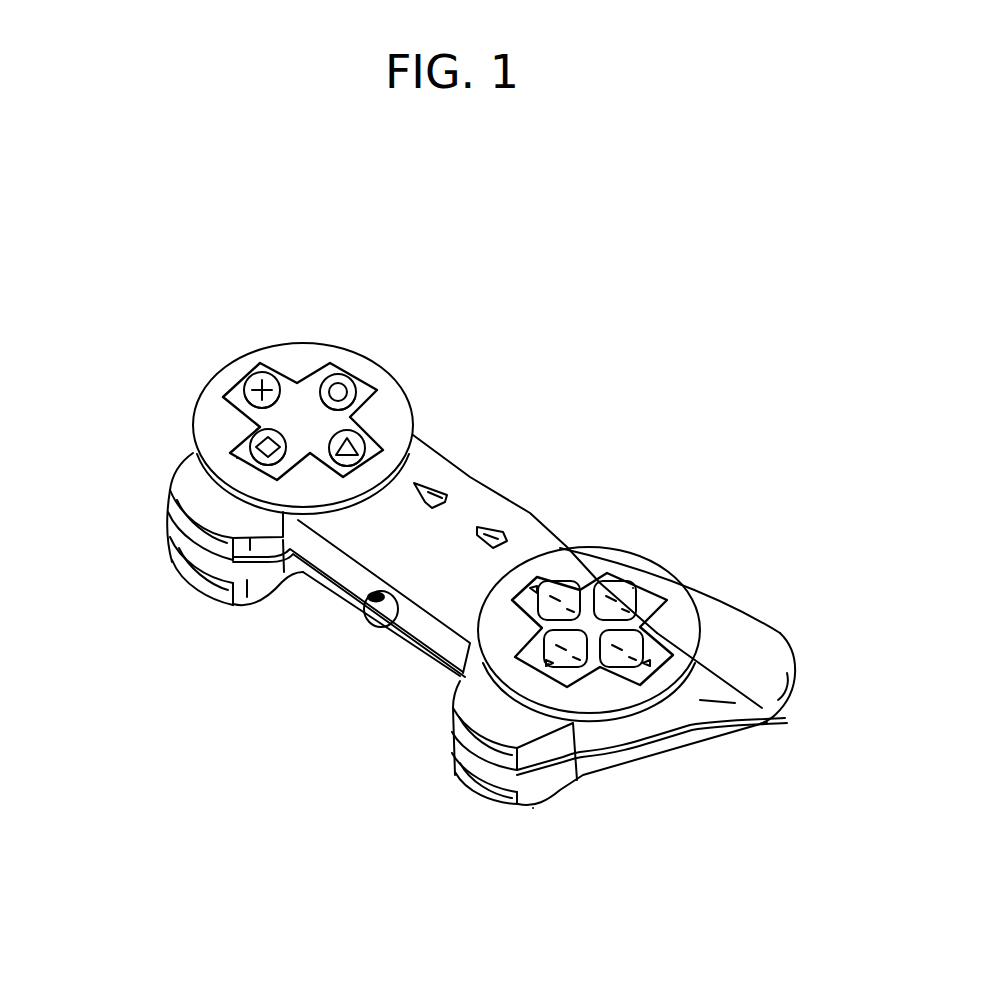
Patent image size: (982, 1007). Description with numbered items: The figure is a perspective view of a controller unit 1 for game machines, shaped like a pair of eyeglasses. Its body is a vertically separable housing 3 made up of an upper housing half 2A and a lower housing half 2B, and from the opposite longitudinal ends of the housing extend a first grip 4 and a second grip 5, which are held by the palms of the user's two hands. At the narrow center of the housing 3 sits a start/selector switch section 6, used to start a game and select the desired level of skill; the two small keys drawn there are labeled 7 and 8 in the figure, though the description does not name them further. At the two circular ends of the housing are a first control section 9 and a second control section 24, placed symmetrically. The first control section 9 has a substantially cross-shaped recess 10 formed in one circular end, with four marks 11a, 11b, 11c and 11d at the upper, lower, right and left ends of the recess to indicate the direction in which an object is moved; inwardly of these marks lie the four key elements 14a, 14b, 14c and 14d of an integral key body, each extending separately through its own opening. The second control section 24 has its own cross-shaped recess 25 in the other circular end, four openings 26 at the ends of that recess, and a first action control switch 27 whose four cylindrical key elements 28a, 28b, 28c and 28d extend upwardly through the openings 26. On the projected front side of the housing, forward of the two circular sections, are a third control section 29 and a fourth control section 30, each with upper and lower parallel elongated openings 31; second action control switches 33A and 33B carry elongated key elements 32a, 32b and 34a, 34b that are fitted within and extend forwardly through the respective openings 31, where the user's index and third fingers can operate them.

The controller unit 1 is at (545, 241).
The upper housing half 2A is at (645, 723).
The lower housing half 2B is at (613, 763).
The housing 3 is at (737, 783).
The first grip 4 is at (788, 623).
The second grip 5 is at (401, 357).
The start/selector switch section 6 is at (488, 402).
The select button 7 is at (496, 528).
The start button 8 is at (440, 495).
The first control section 9 is at (650, 535).
The cross-shaped recess 10 is at (655, 630).
The mark 11a is at (548, 664).
The mark 11b is at (548, 590).
The mark 11c is at (633, 588).
The mark 11d is at (762, 708).
The key element 14a is at (570, 650).
The key element 14b is at (572, 586).
The key element 14c is at (614, 588).
The key element 14d is at (675, 652).
The second control section 24 is at (285, 330).
The cross-shaped recess 25 is at (298, 384).
The openings 26 is at (235, 456).
The first action control switch 27 is at (223, 385).
The cylindrical key element 28a is at (255, 437).
The cylindrical key element 28b is at (252, 372).
The cylindrical key element 28c is at (342, 375).
The cylindrical key element 28d is at (358, 434).
The third control section 29 is at (471, 815).
The fourth control section 30 is at (203, 612).
The elongated openings 31 is at (548, 796).
The elongated key element 32a is at (463, 742).
The elongated key element 32b is at (463, 790).
The second action control switch 33A is at (93, 520).
The second action control switch 33B is at (343, 752).
The elongated key element 34a is at (188, 543).
The elongated key element 34b is at (188, 583).